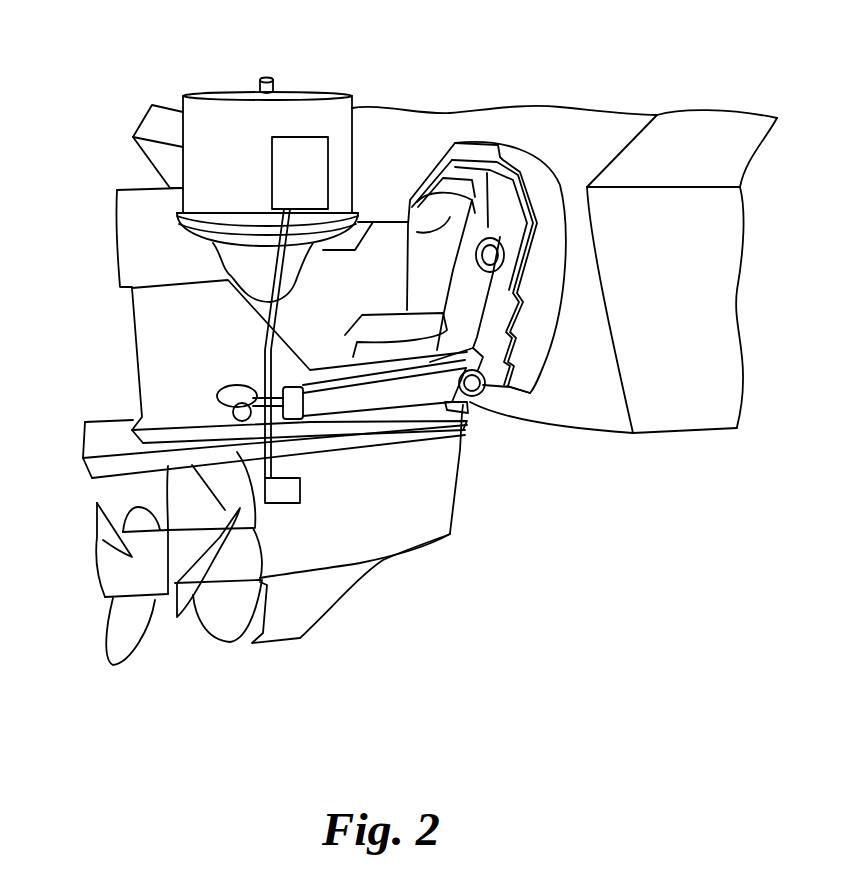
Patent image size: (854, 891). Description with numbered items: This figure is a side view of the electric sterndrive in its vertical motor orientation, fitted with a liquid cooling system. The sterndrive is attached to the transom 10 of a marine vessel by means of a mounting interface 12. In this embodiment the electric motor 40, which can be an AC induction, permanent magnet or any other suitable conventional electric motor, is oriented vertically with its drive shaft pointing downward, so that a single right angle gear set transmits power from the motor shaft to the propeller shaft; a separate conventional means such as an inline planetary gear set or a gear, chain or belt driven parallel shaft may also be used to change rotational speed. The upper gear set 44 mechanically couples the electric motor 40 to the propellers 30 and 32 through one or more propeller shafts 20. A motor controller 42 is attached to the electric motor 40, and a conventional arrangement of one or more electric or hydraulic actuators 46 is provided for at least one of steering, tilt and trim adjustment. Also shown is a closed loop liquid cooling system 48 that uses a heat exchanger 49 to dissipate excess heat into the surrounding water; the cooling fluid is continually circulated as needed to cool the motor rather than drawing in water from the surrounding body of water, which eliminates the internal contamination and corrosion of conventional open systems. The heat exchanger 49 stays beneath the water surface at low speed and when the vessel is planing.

The transom 10 is at (682, 290).
The mounting interface 12 is at (547, 212).
The propeller shaft 20 is at (343, 538).
The propeller 30 is at (113, 660).
The propeller 32 is at (235, 638).
The electric motor 40 is at (222, 113).
The motor controller 42 is at (128, 212).
The upper gear set 44 is at (324, 262).
The actuator 46 is at (383, 392).
The closed loop liquid cooling system 48 is at (300, 137).
The heat exchanger 49 is at (293, 490).